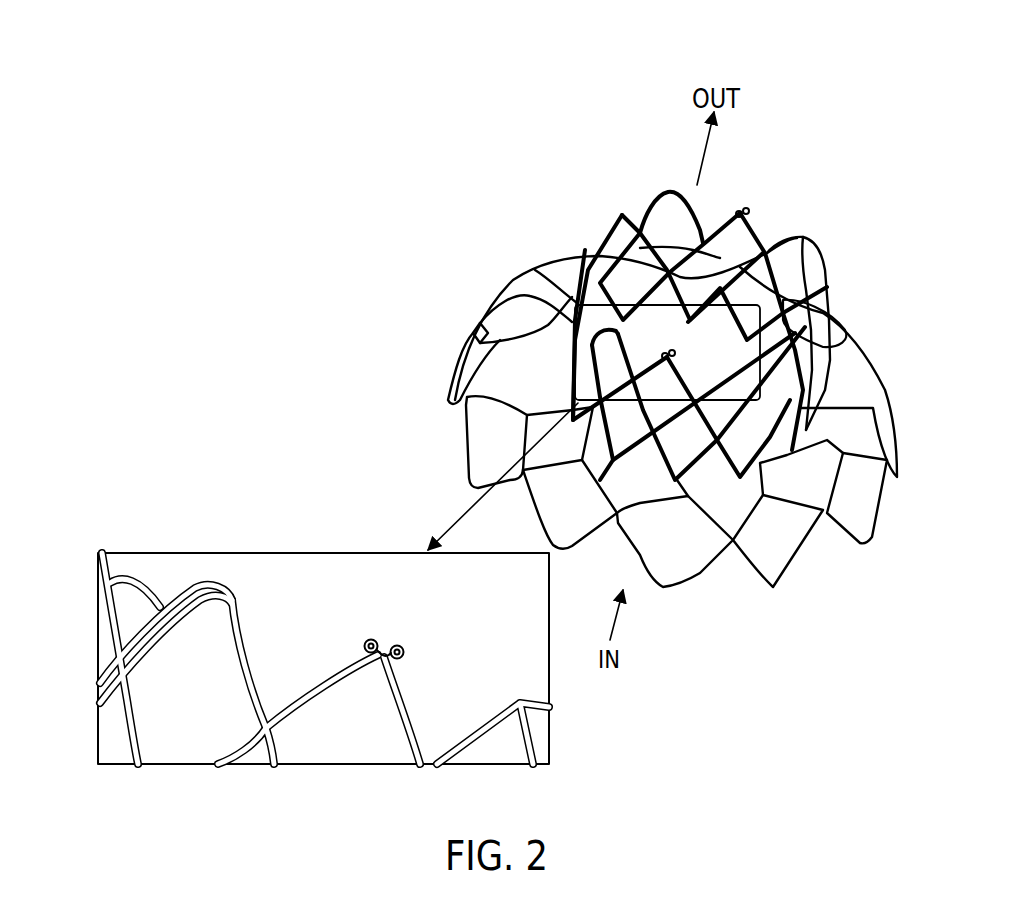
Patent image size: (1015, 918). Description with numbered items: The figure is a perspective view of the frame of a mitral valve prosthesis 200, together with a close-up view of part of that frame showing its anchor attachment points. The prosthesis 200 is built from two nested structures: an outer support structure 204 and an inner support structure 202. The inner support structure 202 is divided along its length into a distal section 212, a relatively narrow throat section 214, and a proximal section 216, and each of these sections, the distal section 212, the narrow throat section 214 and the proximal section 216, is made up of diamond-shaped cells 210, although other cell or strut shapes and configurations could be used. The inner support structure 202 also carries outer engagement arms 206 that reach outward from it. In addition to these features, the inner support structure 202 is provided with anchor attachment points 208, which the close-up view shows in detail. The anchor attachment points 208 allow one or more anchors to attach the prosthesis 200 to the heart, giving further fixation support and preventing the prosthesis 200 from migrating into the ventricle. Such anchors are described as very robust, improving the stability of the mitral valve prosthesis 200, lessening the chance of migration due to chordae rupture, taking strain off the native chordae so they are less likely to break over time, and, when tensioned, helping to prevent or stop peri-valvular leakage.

The mitral valve prosthesis 200 is at (933, 95).
The inner support structure 202 is at (608, 229).
The outer support structure 204 is at (776, 590).
The outer engagement arms 206 is at (550, 318).
The anchor attachment points 208 is at (745, 205).
The diamond-shaped cells 210 is at (462, 384).
The distal section 212 is at (836, 285).
The narrow throat section 214 is at (823, 352).
The proximal section 216 is at (880, 528).